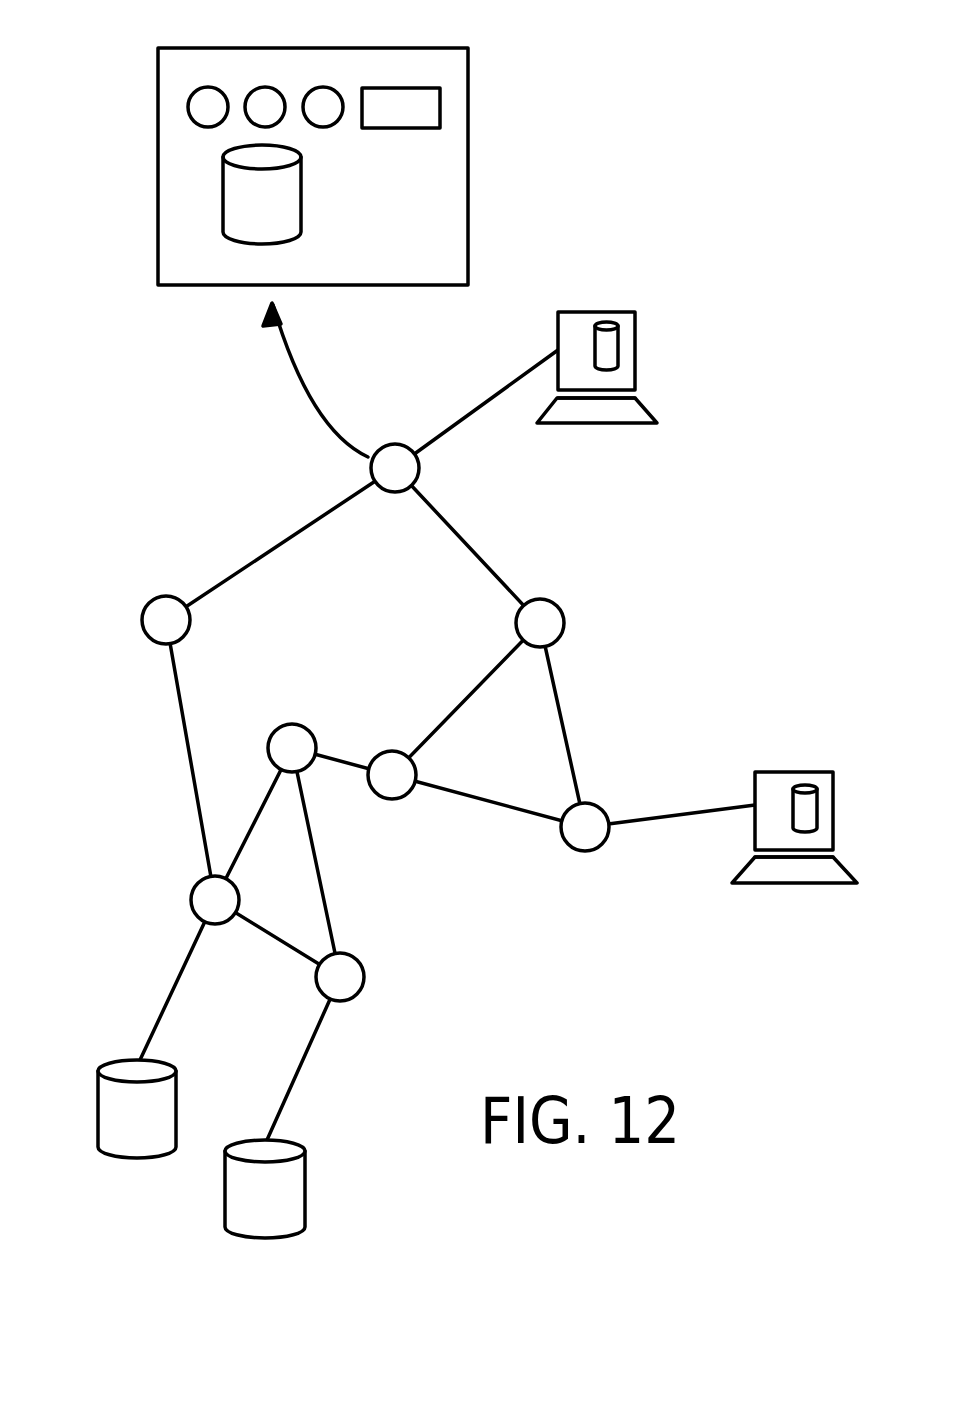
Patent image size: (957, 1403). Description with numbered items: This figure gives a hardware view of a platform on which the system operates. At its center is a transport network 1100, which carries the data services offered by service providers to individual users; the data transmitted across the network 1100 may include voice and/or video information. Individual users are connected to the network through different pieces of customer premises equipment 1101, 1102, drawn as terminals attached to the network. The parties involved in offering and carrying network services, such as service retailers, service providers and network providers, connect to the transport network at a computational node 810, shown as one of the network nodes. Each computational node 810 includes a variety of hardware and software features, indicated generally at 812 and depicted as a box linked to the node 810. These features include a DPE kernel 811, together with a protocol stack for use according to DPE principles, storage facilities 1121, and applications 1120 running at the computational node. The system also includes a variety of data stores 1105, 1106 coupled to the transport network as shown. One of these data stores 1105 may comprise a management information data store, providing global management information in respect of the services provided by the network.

The computational node 810 is at (370, 467).
The DPE kernel 811 is at (413, 88).
The hardware and software features 812 is at (485, 190).
The transport network 1100 is at (165, 755).
The customer premises equipment 1101 is at (633, 345).
The customer premises equipment 1102 is at (767, 885).
The data store 1105 is at (113, 1158).
The data store 1106 is at (245, 1240).
The applications 1120 is at (188, 105).
The storage facilities 1121 is at (223, 217).